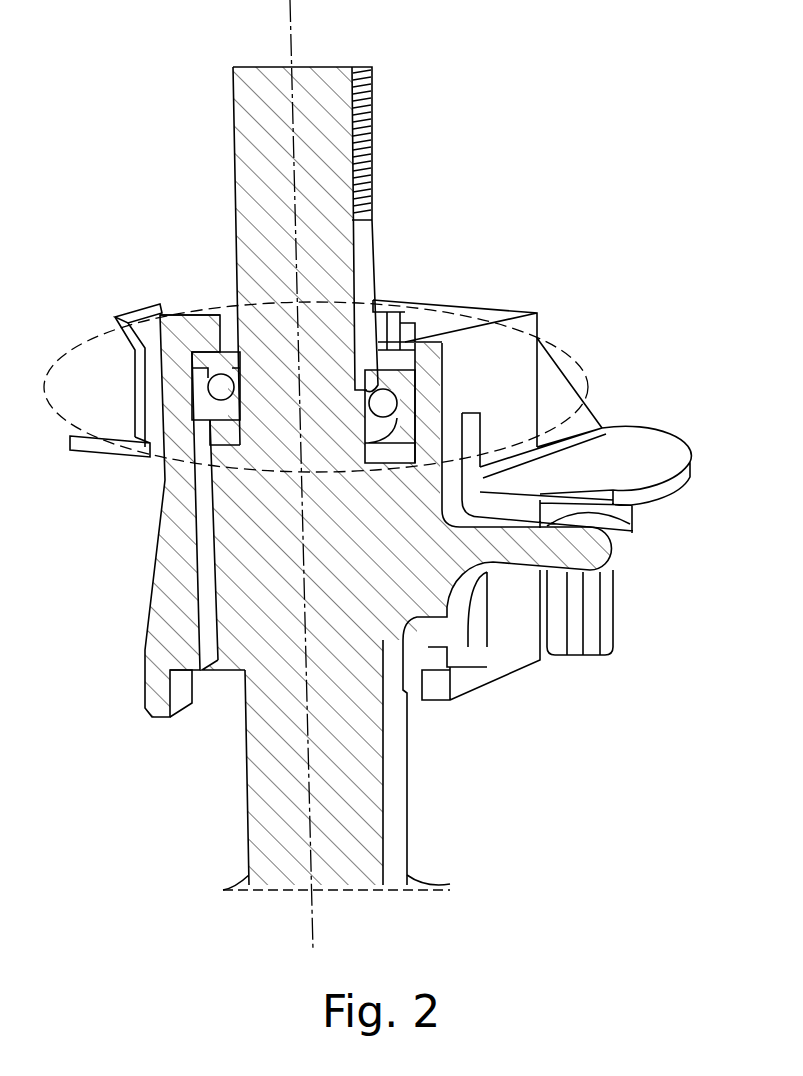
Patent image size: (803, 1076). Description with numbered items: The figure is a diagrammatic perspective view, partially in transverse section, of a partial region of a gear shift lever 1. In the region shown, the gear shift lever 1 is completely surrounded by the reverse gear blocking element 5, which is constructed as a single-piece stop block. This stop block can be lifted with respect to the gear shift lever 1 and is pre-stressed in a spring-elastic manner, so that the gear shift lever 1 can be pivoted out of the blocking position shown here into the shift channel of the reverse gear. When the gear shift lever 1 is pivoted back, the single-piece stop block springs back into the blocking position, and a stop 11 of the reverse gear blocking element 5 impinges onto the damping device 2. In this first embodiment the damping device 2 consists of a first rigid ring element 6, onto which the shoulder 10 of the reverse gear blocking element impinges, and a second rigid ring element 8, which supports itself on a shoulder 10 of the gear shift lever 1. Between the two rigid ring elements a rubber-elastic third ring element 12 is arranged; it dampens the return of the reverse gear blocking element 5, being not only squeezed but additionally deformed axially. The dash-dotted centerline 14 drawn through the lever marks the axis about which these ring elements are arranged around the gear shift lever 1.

The gear shift lever 1 is at (250, 97).
The damping device 2 is at (205, 402).
The reverse gear blocking element 5 is at (152, 595).
The first rigid ring element 6 is at (412, 393).
The second rigid ring element 8 is at (437, 447).
The shoulder 10 is at (220, 438).
The stop 11 is at (205, 345).
The rubber-elastic third ring element 12 is at (216, 388).
The axis of rotation 14 is at (262, 0).